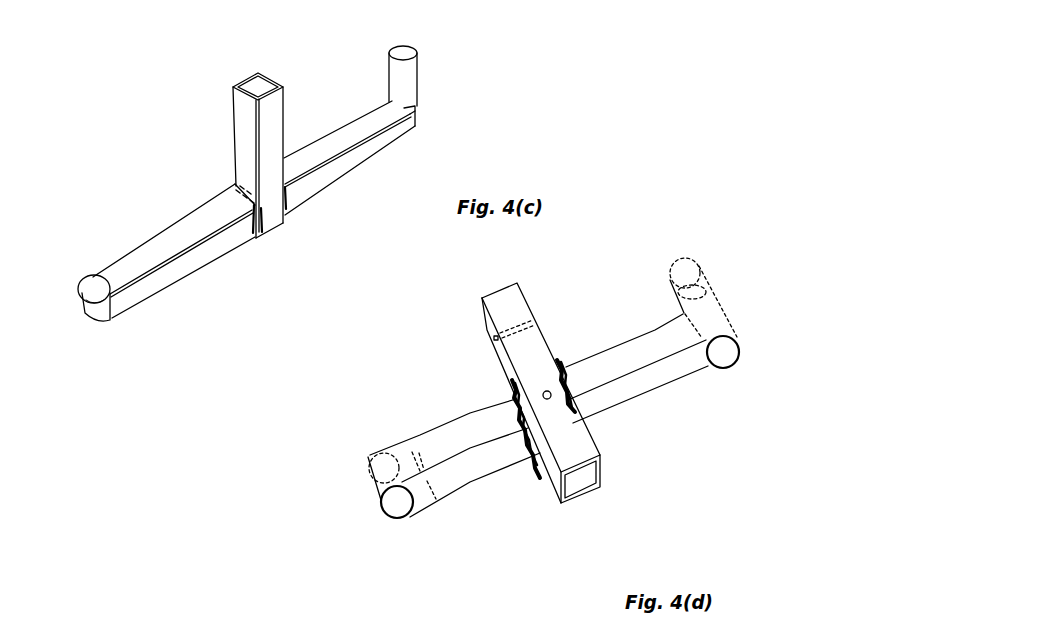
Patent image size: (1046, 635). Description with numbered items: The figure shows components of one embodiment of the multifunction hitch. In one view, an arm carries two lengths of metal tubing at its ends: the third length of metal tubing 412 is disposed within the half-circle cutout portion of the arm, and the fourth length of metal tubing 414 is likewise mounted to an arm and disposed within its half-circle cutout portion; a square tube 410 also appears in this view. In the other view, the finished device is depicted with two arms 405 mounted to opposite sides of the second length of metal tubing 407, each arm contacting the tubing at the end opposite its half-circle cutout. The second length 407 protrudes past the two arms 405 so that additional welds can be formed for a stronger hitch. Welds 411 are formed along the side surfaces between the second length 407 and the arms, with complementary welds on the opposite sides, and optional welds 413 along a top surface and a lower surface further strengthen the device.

In FIG. 4D, the arms 405 is at (657, 342).
In FIG. 4D, the second length of metal tubing 407 is at (535, 340).
In FIG. 4C, the vertical square tube 410 is at (291, 182).
In FIG. 4D, the welds 411 is at (518, 388).
In FIG. 4C, the third length of metal tubing 412 is at (98, 311).
In FIG. 4D, the optional welds 413 is at (528, 393).
In FIG. 4C, the fourth length of metal tubing 414 is at (412, 92).